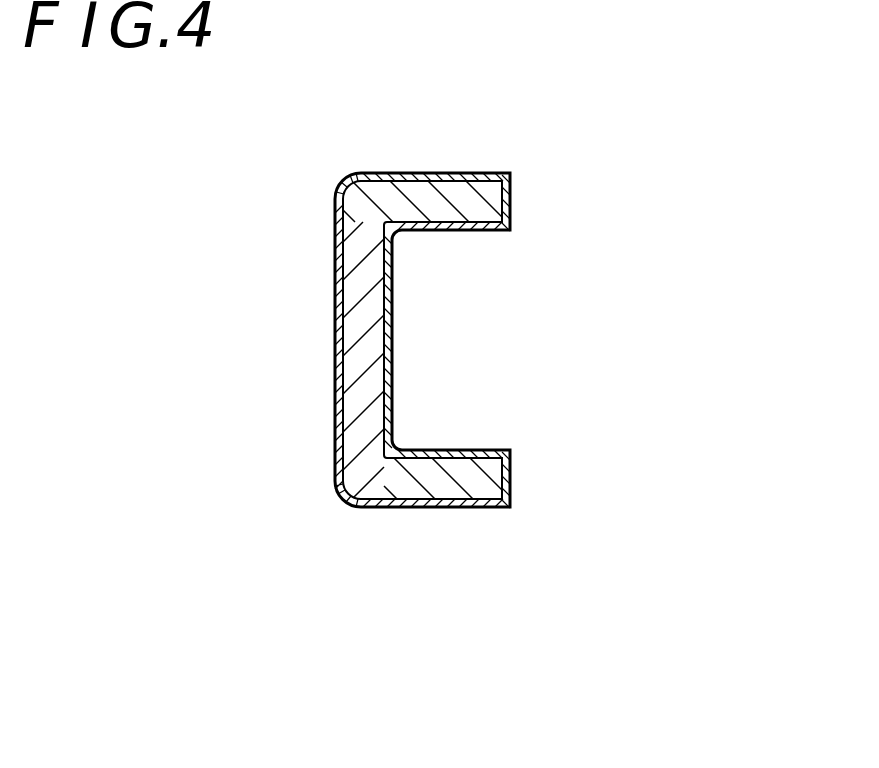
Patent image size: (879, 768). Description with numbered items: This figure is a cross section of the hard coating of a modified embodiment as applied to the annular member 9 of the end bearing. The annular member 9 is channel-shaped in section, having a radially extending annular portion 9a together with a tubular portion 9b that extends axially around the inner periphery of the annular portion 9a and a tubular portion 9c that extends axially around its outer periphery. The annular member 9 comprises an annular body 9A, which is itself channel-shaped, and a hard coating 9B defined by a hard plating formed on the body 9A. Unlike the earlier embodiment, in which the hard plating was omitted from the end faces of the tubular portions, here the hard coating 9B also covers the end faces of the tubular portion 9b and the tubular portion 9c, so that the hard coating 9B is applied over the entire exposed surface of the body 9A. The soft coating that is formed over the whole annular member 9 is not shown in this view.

The annular member 9 is at (449, 308).
The annular body 9A is at (377, 303).
The hard coating 9B is at (337, 242).
The annular portion 9a is at (367, 293).
The tubular portion 9b is at (458, 477).
The tubular portion 9c is at (437, 197).